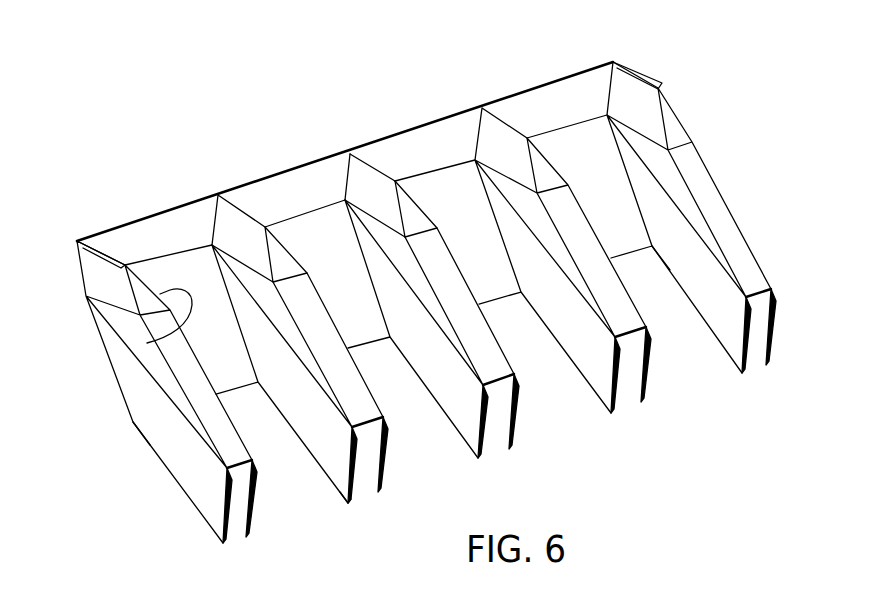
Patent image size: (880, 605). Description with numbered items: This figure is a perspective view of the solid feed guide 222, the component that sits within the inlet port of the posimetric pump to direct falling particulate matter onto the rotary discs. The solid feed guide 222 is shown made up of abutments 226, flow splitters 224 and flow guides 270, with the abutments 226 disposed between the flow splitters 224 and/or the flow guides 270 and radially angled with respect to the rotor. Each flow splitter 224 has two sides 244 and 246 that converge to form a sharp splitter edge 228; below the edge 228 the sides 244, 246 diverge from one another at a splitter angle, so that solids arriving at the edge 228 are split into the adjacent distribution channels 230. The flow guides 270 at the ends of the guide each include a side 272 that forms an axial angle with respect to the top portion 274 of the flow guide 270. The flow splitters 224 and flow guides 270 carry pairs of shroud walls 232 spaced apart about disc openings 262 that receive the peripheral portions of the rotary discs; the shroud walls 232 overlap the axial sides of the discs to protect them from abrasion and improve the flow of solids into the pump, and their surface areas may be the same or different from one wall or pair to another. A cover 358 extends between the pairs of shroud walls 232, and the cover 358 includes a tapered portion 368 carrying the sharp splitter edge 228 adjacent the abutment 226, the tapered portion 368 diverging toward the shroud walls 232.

The solid feed guide 222 is at (85, 128).
The flow splitter 224 is at (346, 183).
The abutment 226 is at (173, 270).
The sharp splitter edge 228 is at (372, 163).
The distribution channel 230 is at (439, 317).
The shroud wall 232 is at (207, 493).
The side 244 is at (362, 171).
The side 246 is at (413, 197).
The disc opening 262 is at (357, 496).
The flow guide 270 is at (349, 186).
The side 272 is at (147, 343).
The top portion 274 is at (103, 243).
The cover 358 is at (217, 432).
The tapered portion 368 is at (272, 253).